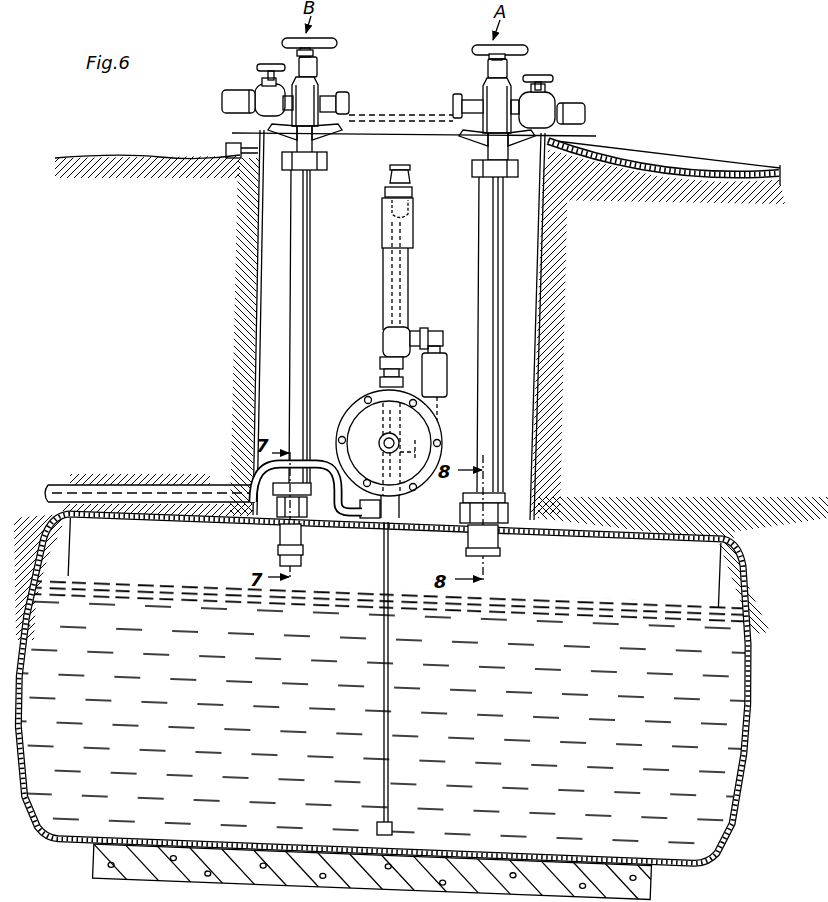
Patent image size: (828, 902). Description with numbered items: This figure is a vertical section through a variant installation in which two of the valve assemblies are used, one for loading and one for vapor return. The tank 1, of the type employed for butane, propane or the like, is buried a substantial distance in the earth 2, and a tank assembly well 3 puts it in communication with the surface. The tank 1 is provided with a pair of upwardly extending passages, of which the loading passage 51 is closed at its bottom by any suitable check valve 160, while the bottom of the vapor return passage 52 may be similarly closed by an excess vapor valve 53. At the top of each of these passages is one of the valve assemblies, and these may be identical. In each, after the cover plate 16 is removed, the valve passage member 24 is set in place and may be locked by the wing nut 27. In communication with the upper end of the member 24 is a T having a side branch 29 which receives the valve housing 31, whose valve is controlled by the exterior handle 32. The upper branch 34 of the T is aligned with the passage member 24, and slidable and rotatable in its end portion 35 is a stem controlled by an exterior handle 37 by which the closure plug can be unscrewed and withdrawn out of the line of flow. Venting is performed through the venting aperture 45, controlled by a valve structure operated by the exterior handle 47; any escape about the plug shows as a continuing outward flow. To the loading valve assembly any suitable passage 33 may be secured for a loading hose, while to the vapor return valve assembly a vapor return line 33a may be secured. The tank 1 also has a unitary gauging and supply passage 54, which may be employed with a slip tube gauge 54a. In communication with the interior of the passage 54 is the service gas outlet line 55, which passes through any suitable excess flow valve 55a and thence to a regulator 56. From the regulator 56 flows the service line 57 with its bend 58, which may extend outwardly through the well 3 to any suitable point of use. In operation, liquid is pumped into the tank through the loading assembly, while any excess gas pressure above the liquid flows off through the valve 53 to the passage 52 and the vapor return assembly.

The buried tank 1 is at (615, 528).
The earth 2 is at (105, 158).
The tank assembly well 3 is at (240, 270).
The cover plate 16 is at (657, 165).
The valve passage member 24 is at (256, 133).
The wing nut 27 is at (320, 160).
The side branch 29 is at (292, 92).
The valve housing 31 is at (262, 92).
The exterior handle 32 is at (268, 66).
The passage 33 is at (572, 108).
The vapor return line 33a is at (228, 102).
The upper branch 34 is at (320, 88).
The end portion 35 is at (318, 67).
The exterior handle 37 is at (296, 40).
The venting aperture 45 is at (337, 96).
The exterior handle 47 is at (350, 103).
The loading passage 51 is at (495, 318).
The vapor return passage 52 is at (293, 322).
The excess vapor valve 53 is at (280, 546).
The unitary gauging and supply passage 54 is at (384, 291).
The slip tube gauge 54a is at (385, 558).
The service gas outlet line 55 is at (438, 433).
The excess flow valve 55a is at (447, 405).
The regulator 56 is at (372, 422).
The service line 57 is at (352, 506).
The bend 58 is at (270, 466).
The check valve 160 is at (500, 548).